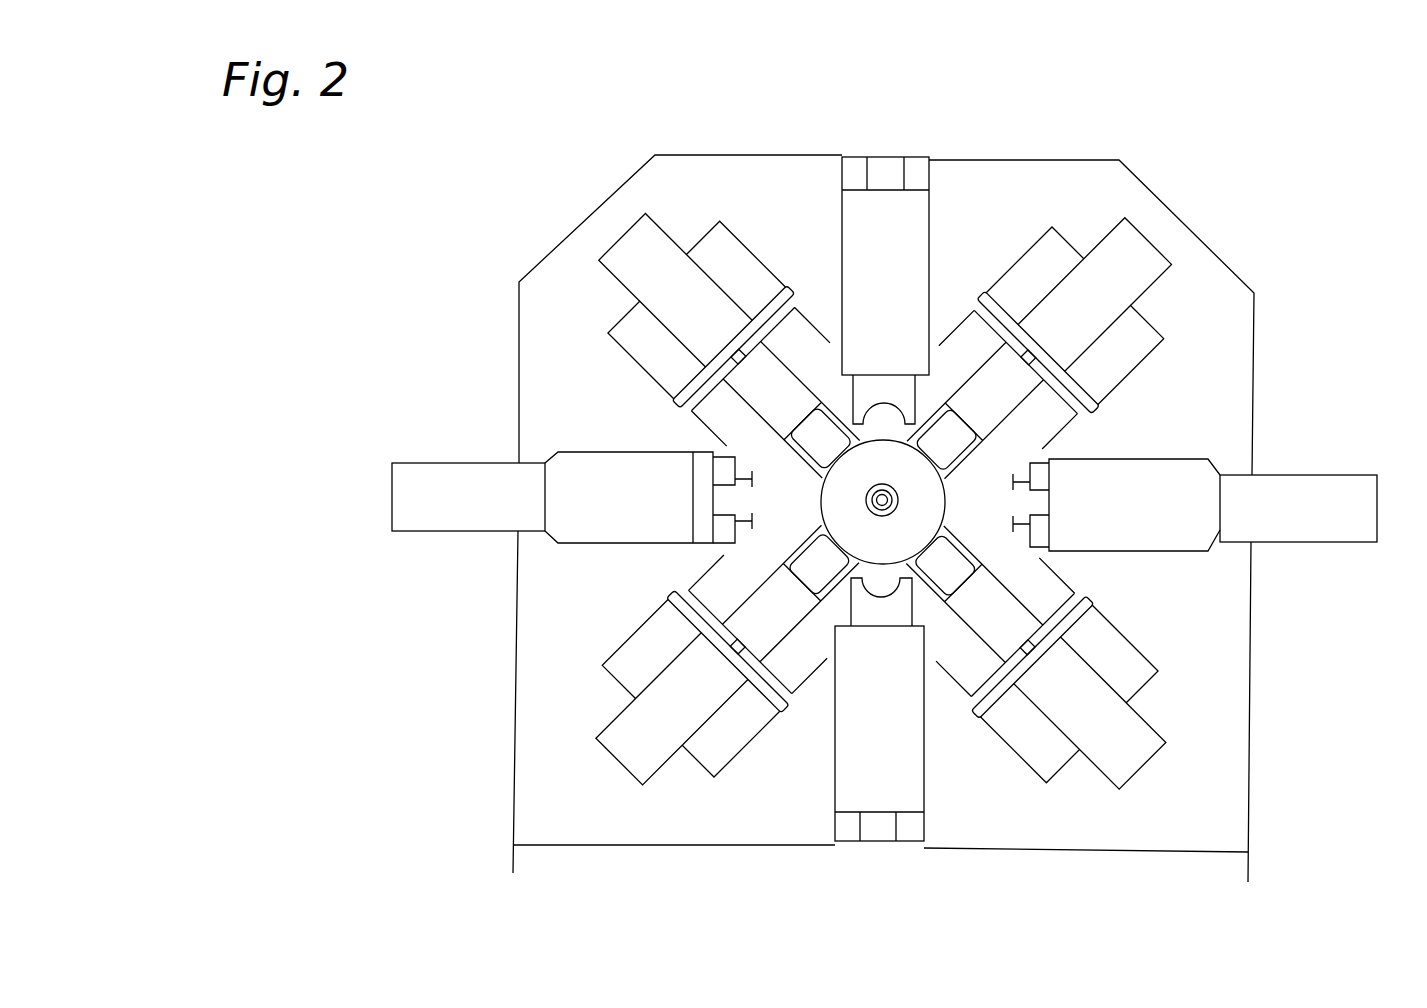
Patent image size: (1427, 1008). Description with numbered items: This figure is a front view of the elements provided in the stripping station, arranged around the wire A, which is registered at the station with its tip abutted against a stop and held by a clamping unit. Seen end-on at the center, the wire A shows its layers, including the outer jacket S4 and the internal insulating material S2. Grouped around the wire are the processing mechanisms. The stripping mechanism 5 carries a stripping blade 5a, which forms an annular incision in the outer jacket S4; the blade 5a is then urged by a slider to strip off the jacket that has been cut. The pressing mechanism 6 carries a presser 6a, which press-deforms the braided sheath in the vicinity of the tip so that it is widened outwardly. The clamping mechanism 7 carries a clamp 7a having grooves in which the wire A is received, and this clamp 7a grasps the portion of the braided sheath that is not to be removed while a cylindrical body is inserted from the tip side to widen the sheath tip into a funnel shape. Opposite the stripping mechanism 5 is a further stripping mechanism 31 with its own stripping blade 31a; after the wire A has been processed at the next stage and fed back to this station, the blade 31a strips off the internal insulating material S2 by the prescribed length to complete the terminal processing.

The stripping mechanism 5 is at (547, 541).
The stripping blade 5a is at (692, 545).
The pressing mechanism 6 is at (672, 223).
The presser 6a is at (822, 570).
The clamping mechanism 7 is at (931, 212).
The clamp 7a is at (878, 390).
The stripping mechanism 31 is at (1293, 549).
The stripping blade 31a is at (1041, 549).
The wire A is at (906, 500).
The internal insulating material S2 is at (881, 490).
The outer jacket S4 is at (882, 514).